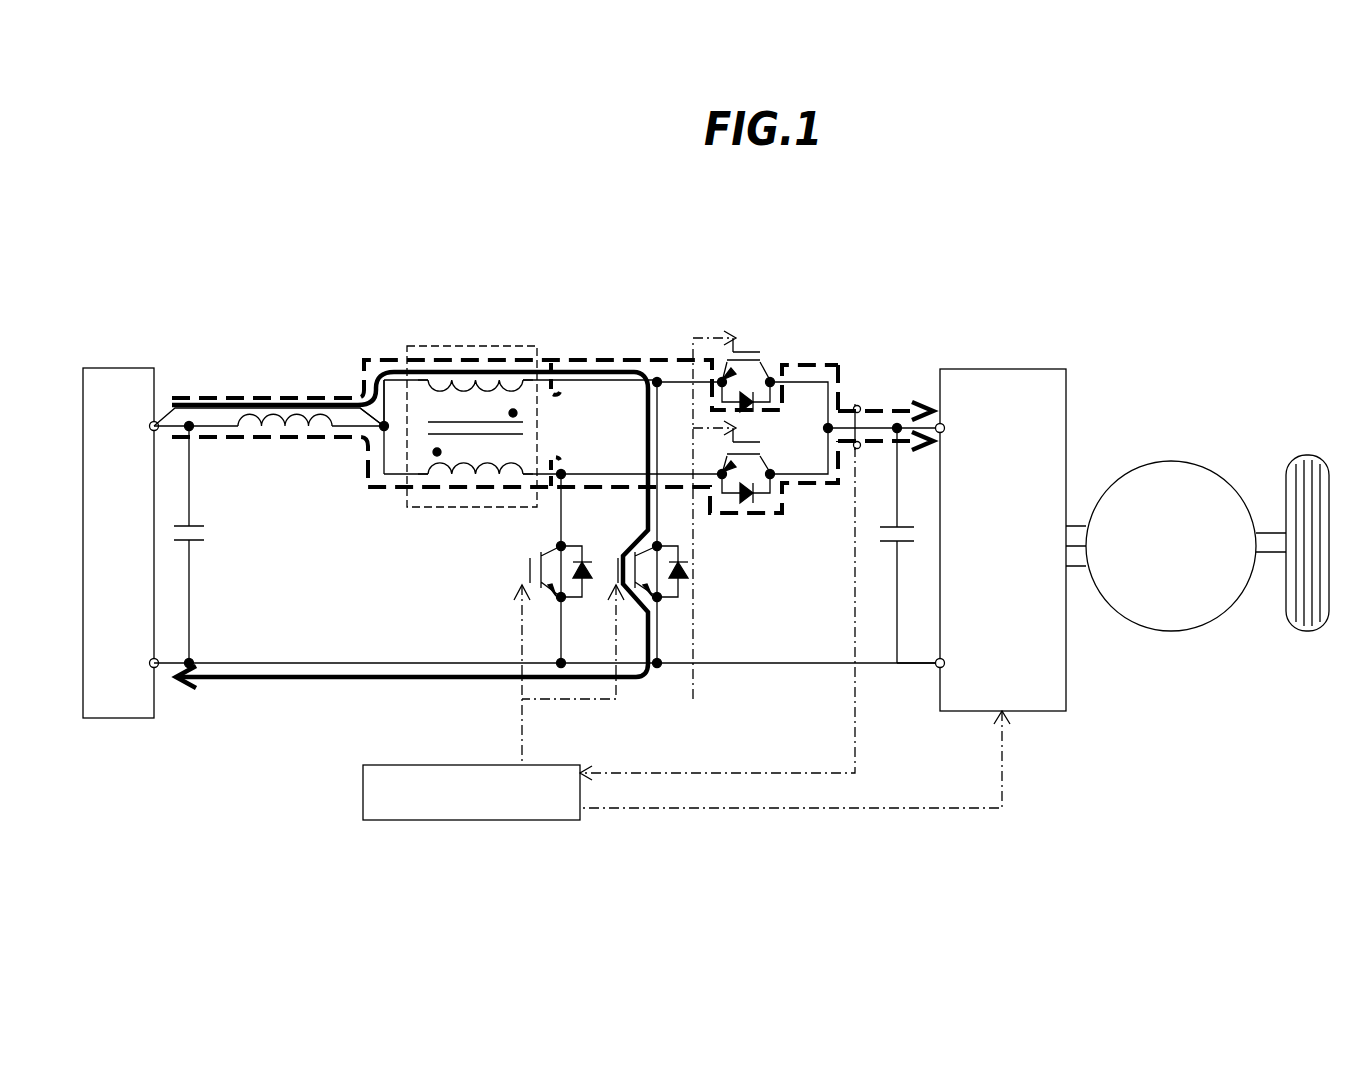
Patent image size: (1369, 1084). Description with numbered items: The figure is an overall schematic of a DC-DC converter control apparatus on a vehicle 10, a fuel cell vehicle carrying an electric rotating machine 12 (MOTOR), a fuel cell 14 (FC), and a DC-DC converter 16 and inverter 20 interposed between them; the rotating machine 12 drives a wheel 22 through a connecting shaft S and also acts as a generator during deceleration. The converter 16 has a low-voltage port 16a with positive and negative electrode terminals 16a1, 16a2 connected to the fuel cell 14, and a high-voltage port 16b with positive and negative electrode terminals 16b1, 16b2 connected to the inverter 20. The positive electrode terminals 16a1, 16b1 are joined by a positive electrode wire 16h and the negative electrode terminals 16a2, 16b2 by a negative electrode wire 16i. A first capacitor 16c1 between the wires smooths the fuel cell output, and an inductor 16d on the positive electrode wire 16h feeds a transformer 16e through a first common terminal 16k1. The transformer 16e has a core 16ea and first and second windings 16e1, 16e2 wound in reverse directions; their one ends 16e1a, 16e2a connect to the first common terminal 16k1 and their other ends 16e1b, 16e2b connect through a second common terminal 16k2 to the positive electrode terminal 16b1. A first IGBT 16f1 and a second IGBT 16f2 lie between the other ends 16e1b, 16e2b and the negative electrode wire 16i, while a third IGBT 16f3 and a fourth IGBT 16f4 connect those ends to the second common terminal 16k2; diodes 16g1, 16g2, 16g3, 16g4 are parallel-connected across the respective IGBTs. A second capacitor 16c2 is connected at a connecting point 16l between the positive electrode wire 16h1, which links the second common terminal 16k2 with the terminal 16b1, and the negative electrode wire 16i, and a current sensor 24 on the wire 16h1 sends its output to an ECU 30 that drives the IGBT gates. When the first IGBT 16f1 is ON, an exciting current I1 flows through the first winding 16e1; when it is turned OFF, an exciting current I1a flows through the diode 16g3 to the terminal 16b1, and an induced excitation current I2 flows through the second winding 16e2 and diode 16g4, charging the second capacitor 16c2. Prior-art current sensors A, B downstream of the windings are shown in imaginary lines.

The vehicle 10 is at (1020, 260).
The electric rotating machine 12 is at (1183, 461).
The fuel cell 14 is at (117, 368).
The DC-DC converter 16 is at (800, 301).
The low-voltage port 16a is at (269, 526).
The positive electrode terminal 16a1 is at (176, 406).
The negative electrode terminal 16a2 is at (157, 666).
The high-voltage port 16b is at (894, 528).
The positive electrode terminal 16b1 is at (910, 411).
The negative electrode terminal 16b2 is at (938, 666).
The first capacitor 16c1 is at (200, 540).
The second capacitor 16c2 is at (880, 541).
The inductor 16d is at (297, 422).
The transformer 16e is at (527, 407).
The first winding 16e1 is at (483, 392).
The one end of first winding 16e1a is at (418, 382).
The other end of first winding 16e1b is at (527, 388).
The second winding 16e2 is at (483, 460).
The one end of second winding 16e2a is at (408, 477).
The other end of second winding 16e2b is at (527, 487).
The core 16ea is at (507, 432).
The first IGBT 16f1 is at (624, 558).
The second IGBT 16f2 is at (528, 562).
The third IGBT 16f3 is at (760, 360).
The fourth IGBT 16f4 is at (770, 458).
The diode 16g1 is at (688, 583).
The diode 16g2 is at (583, 587).
The diode 16g3 is at (768, 404).
The diode 16g4 is at (745, 500).
The positive electrode wire 16h is at (269, 377).
The positive electrode wire 16h1 is at (871, 428).
The negative electrode wire 16i is at (330, 665).
The first common terminal 16k1 is at (367, 413).
The second common terminal 16k2 is at (845, 395).
The connecting point 16l is at (908, 444).
The inverter 20 is at (1017, 369).
The wheel 22 is at (1310, 457).
The current sensor 24 is at (852, 452).
The ECU 30 is at (538, 820).
The current sensor A is at (548, 362).
The current sensor B is at (546, 398).
The exciting current I1 is at (410, 553).
The exciting current I1a is at (653, 358).
The excitation current I2 is at (272, 440).
The connecting shaft S is at (1268, 530).